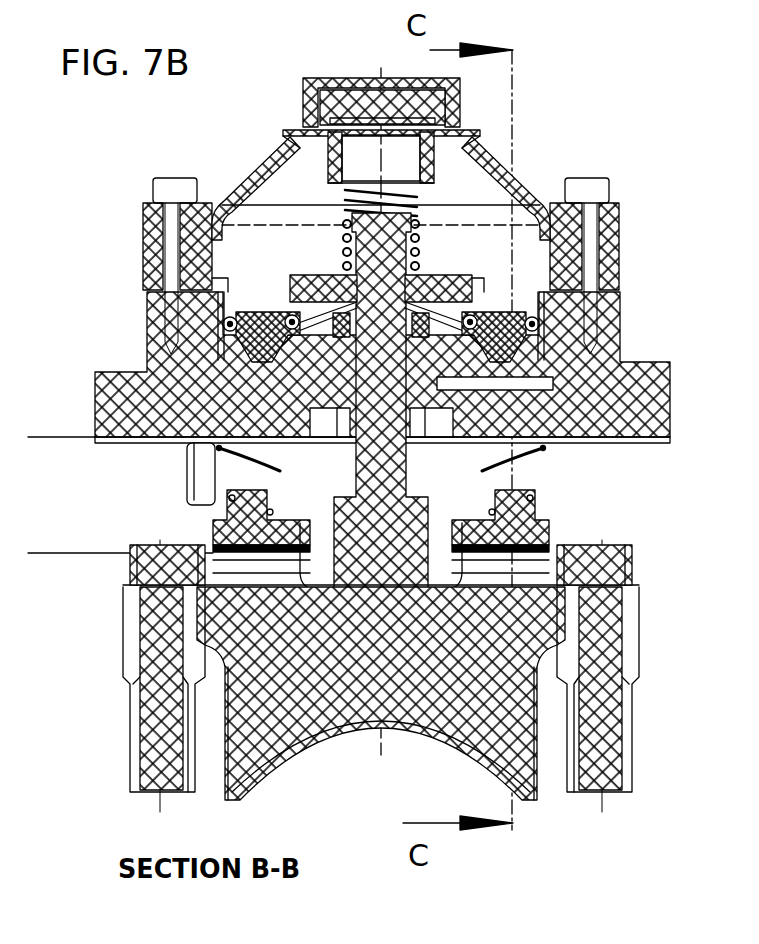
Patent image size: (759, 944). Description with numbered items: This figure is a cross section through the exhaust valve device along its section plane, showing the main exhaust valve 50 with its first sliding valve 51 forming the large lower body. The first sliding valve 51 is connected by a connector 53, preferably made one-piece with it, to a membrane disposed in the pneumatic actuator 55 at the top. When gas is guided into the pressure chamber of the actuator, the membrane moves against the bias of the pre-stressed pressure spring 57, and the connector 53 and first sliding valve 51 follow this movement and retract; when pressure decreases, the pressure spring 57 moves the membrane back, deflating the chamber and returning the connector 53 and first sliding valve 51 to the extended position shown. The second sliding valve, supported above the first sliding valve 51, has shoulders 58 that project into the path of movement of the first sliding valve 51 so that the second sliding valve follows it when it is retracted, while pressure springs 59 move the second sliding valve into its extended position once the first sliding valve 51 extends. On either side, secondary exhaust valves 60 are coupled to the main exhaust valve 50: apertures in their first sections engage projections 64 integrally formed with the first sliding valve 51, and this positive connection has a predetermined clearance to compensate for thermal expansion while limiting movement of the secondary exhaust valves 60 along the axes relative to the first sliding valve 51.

The main exhaust valve 50 is at (345, 780).
The first sliding valve 51 is at (277, 728).
The connector 53 is at (368, 395).
The pneumatic actuator 55 is at (552, 155).
The pressure spring 57 is at (343, 203).
The shoulders 58 is at (230, 532).
The pressure springs 59 is at (216, 456).
The secondary exhaust valves 60 is at (102, 680).
The projections 64 is at (148, 614).